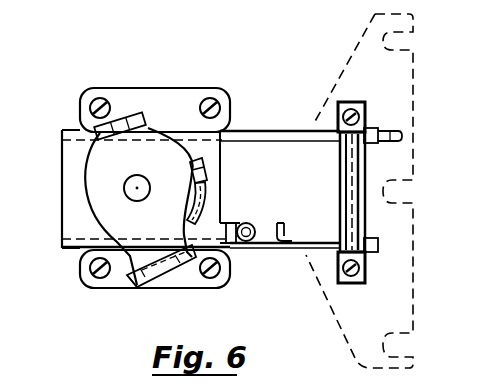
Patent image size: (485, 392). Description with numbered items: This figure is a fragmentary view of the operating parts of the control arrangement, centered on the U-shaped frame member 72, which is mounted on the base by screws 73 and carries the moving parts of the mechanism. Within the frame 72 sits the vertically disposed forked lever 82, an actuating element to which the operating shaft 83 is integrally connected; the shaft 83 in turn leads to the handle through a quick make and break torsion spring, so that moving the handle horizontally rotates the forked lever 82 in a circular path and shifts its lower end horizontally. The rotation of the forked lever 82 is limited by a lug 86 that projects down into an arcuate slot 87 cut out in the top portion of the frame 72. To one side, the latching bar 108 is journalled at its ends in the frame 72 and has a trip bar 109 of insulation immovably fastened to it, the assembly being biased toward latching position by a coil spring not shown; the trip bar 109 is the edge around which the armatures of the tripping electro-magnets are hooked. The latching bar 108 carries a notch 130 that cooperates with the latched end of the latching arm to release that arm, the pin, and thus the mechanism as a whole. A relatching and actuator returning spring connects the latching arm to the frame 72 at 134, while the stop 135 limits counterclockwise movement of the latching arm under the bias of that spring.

The U-shaped frame member 72 is at (64, 248).
The screws 73 is at (224, 102).
The forked lever 82 is at (92, 174).
The operating shaft 83 is at (126, 190).
The lug 86 is at (205, 164).
The arcuate slot 87 is at (203, 198).
The latching bar 108 is at (340, 152).
The trip bar 109 is at (408, 85).
The notch 130 is at (320, 250).
The frame connection point 134 is at (249, 222).
The stop 135 is at (280, 232).